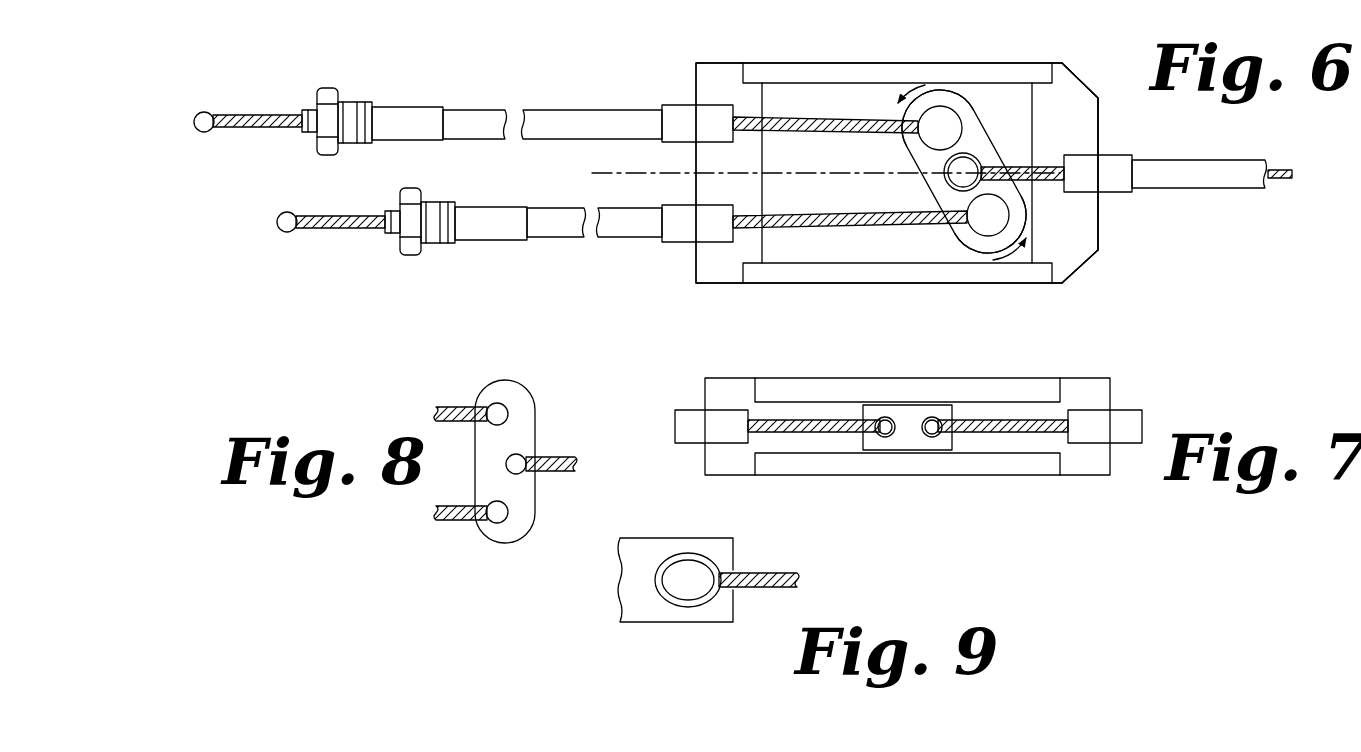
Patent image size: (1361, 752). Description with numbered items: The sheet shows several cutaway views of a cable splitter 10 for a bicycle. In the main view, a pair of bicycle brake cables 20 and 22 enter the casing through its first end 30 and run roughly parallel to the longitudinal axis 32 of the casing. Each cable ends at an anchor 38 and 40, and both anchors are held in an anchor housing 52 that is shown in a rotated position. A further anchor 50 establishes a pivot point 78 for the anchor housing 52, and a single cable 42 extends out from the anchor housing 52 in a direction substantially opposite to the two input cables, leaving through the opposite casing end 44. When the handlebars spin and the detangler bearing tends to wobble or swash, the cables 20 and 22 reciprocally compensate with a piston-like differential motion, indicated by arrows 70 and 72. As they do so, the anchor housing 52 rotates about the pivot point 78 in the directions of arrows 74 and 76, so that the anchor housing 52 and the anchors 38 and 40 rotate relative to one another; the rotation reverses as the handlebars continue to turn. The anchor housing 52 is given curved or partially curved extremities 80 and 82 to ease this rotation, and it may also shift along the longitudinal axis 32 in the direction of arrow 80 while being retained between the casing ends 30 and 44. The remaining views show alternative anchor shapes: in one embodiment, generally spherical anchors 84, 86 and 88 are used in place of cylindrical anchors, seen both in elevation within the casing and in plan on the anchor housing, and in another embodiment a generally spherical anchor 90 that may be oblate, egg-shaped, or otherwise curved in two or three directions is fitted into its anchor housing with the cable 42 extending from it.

In FIG. 6, the cable splitter 10 is at (1092, 267).
In FIG. 6, the bicycle brake cable 20 is at (800, 118).
In FIG. 8, the bicycle brake cable 20 is at (450, 410).
In FIG. 6, the bicycle brake cable 22 is at (827, 225).
In FIG. 7, the bicycle brake cable 22 is at (843, 433).
In FIG. 8, the bicycle brake cable 22 is at (460, 517).
In FIG. 6, the first end of the casing 30 is at (708, 257).
In FIG. 6, the longitudinal axis 32 is at (1350, 174).
In FIG. 6, the anchor 38 is at (935, 122).
In FIG. 6, the anchor 40 is at (997, 212).
In FIG. 6, the cable 42 is at (1035, 183).
In FIG. 7, the cable 42 is at (1015, 433).
In FIG. 8, the cable 42 is at (552, 457).
In FIG. 9, the cable 42 is at (772, 588).
In FIG. 6, the casing end 44 is at (1062, 267).
In FIG. 6, the anchor 50 is at (982, 165).
In FIG. 6, the anchor housing 52 is at (962, 108).
In FIG. 6, the arrow 70 is at (585, 89).
In FIG. 6, the arrow 72 is at (583, 258).
In FIG. 6, the arrow 74 is at (892, 99).
In FIG. 6, the arrow 76 is at (1007, 262).
In FIG. 6, the pivot point 78 is at (965, 172).
In FIG. 6, the curved extremity 80 is at (945, 92).
In FIG. 6, the curved extremity 82 is at (973, 253).
In FIG. 7, the spherical anchor 84 is at (887, 437).
In FIG. 8, the spherical anchor 84 is at (498, 518).
In FIG. 7, the spherical anchor 86 is at (932, 437).
In FIG. 8, the spherical anchor 88 is at (497, 410).
In FIG. 9, the anchor 90 is at (692, 590).